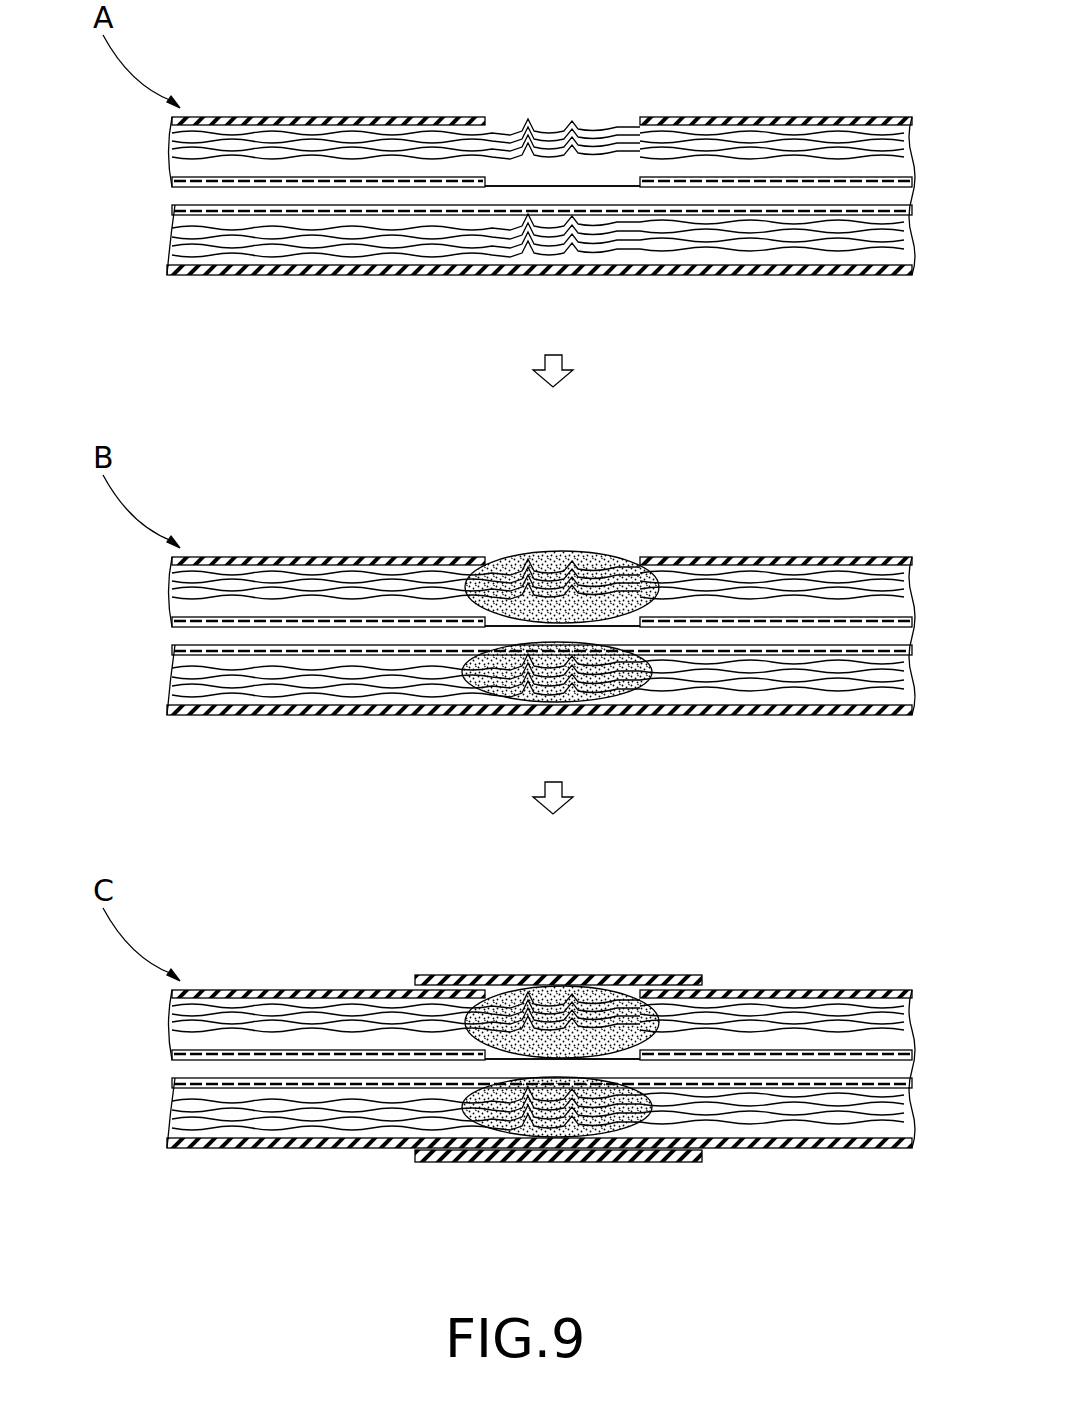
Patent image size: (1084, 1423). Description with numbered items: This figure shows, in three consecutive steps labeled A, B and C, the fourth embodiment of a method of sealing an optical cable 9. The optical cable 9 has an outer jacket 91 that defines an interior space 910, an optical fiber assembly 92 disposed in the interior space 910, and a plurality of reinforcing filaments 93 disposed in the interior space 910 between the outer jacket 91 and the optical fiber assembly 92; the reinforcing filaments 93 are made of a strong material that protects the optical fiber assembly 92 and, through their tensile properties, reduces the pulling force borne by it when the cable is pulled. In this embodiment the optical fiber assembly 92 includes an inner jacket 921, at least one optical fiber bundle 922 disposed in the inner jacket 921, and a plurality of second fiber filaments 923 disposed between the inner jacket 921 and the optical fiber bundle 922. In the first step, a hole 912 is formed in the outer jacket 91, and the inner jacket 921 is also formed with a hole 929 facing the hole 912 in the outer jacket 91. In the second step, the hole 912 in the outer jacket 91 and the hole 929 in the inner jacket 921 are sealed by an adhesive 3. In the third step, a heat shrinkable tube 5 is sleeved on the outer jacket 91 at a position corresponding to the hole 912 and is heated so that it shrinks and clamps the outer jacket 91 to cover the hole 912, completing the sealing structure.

The optical cable 9 is at (692, 86).
The outer jacket 91 is at (259, 277).
The interior space 910 is at (822, 257).
The hole 912 is at (493, 116).
The optical fiber assembly 92 is at (333, 160).
The inner jacket 921 is at (316, 216).
The optical fiber bundle 922 is at (203, 200).
The second fiber filaments 923 is at (238, 178).
The hole 929 is at (490, 178).
The reinforcing filaments 93 is at (882, 162).
The adhesive 3 is at (590, 565).
The heat shrinkable tube 5 is at (588, 1163).